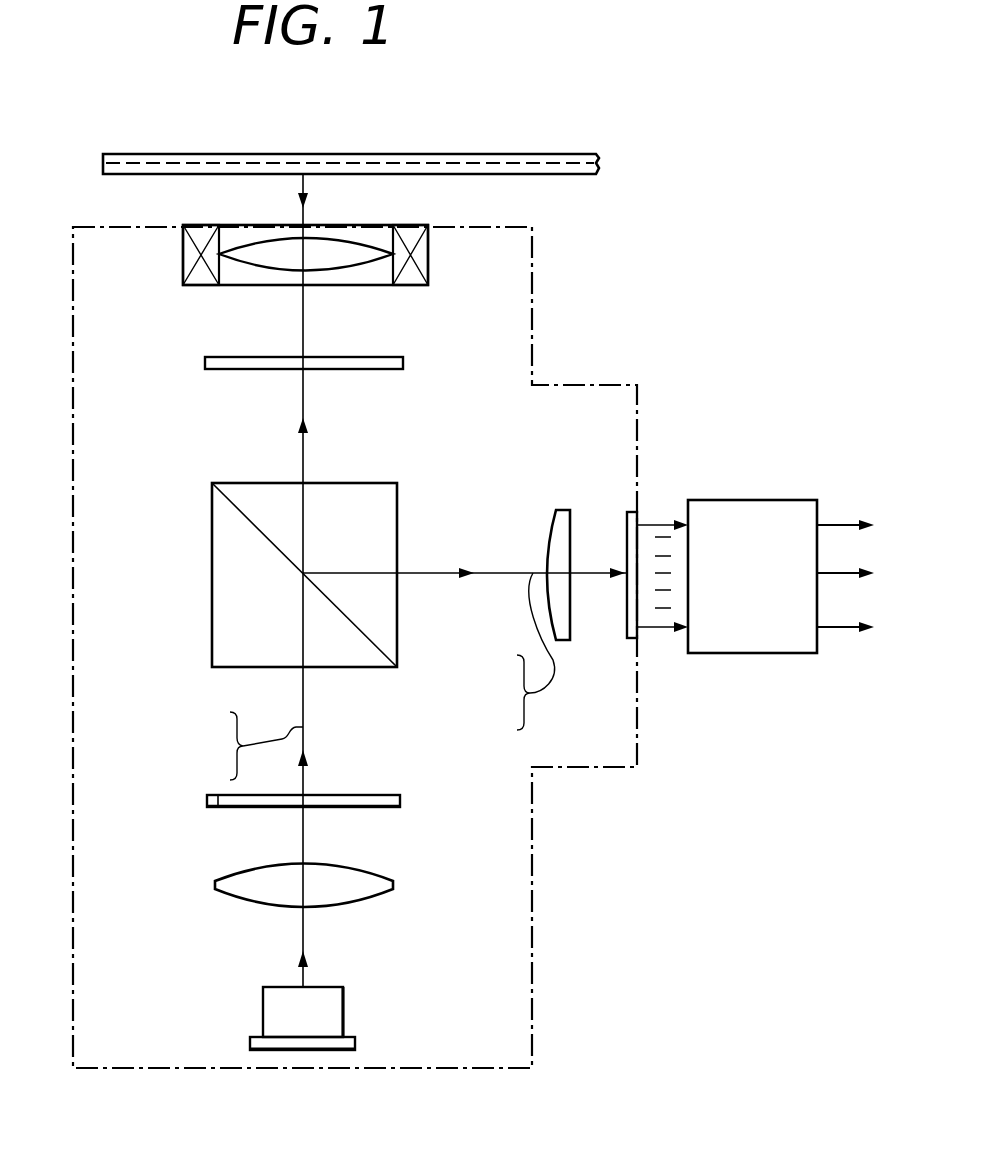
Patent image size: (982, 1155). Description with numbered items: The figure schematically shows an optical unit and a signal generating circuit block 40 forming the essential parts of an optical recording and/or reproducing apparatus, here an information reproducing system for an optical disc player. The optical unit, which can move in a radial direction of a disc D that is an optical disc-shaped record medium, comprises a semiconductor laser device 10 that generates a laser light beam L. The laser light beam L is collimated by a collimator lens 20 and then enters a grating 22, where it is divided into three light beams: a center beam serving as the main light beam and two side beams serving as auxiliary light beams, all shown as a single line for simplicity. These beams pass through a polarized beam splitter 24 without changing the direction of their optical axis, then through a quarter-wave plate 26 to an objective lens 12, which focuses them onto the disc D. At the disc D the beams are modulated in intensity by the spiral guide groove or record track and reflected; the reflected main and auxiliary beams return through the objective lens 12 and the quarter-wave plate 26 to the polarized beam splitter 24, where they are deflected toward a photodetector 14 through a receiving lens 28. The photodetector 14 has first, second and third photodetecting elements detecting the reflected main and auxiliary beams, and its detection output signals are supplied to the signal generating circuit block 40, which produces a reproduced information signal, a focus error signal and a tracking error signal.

The semiconductor laser device 10 is at (343, 1003).
The objective lens 12 is at (358, 238).
The photodetector 14 is at (627, 512).
The collimator lens 20 is at (232, 902).
The grating 22 is at (400, 801).
The polarized beam splitter 24 is at (372, 483).
The 1/4-wave plate 26 is at (362, 357).
The receiving lens 28 is at (553, 518).
The signal generating circuit block 40 is at (777, 500).
The disc D is at (516, 154).
The laser light beam L is at (304, 943).